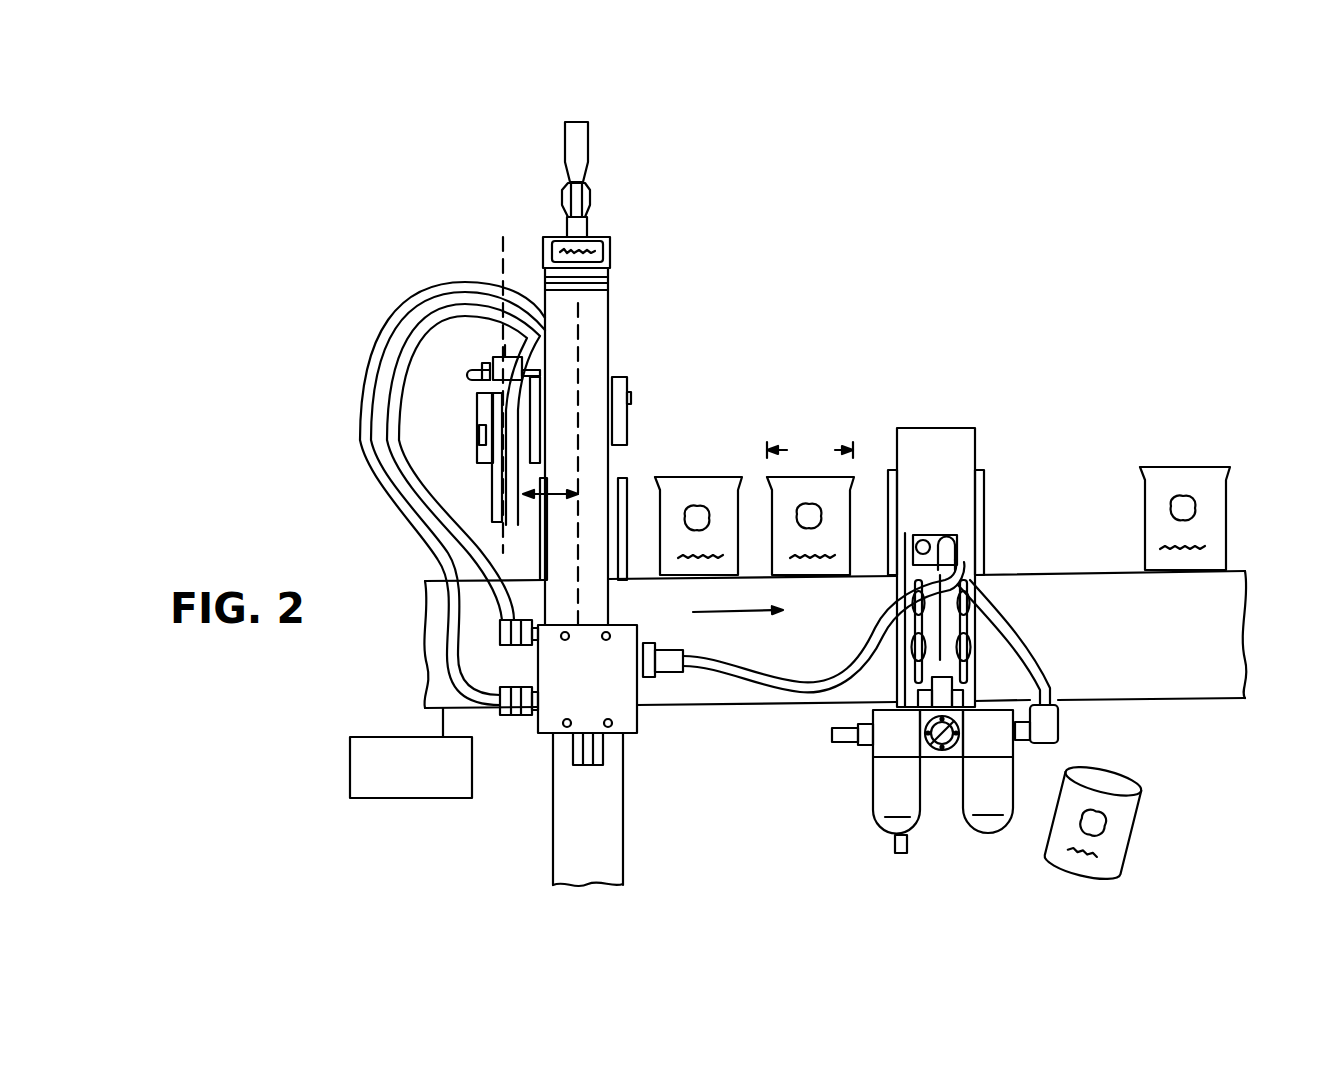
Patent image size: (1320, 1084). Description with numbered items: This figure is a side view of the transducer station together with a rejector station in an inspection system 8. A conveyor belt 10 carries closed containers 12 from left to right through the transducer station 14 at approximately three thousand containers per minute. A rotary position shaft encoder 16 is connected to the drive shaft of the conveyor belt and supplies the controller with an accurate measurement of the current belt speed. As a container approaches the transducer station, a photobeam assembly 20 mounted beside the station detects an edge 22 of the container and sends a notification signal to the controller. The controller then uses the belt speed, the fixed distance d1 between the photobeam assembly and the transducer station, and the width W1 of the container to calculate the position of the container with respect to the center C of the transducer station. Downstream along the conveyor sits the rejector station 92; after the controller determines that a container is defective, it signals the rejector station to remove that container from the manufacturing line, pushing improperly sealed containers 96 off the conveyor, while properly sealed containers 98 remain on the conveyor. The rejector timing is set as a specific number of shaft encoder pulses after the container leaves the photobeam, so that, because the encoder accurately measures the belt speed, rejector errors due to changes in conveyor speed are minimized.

The inspection system 8 is at (876, 300).
The conveyor belt 10 is at (838, 660).
The closed containers 12 is at (707, 477).
The transducer station 14 is at (652, 358).
The rotary position (shaft) encoder 16 is at (433, 790).
The photobeam assembly 20 is at (451, 386).
The edge 22 is at (621, 478).
The rejector station 92 is at (991, 406).
The improperly sealed containers 96 is at (1130, 843).
The properly sealed containers 98 is at (1228, 507).
The center of the transducer station C is at (597, 327).
The fixed distance between the photobeam assembly and the transducer station d1 is at (548, 488).
The width of the container W1 is at (810, 448).